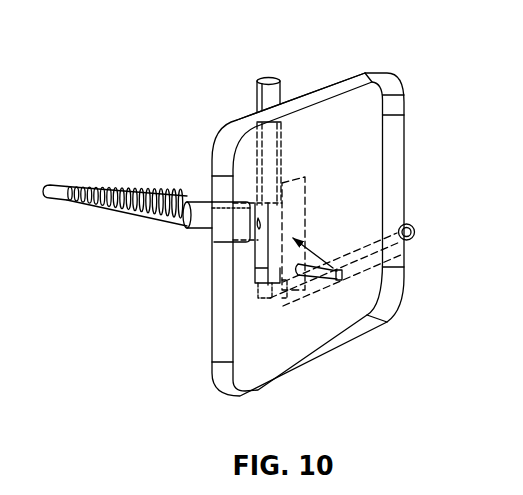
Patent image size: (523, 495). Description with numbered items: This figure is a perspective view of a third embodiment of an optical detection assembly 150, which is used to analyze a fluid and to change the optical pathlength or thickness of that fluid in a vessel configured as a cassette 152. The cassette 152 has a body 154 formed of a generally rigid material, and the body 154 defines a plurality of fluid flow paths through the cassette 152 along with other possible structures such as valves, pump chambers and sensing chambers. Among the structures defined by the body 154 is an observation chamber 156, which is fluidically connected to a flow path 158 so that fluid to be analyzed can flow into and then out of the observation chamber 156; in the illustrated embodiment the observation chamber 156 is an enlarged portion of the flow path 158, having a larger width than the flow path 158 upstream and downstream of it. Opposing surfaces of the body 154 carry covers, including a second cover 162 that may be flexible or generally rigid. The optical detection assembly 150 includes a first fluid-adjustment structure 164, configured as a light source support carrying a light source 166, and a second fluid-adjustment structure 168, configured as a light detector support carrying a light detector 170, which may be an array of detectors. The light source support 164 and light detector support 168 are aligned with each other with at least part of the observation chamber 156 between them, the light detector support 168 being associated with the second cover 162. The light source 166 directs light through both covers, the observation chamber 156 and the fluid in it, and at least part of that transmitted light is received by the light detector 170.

The optical detection assembly 150 is at (126, 281).
The cassette 152 is at (371, 104).
The body 154 is at (337, 80).
The observation chamber 156 is at (253, 247).
The flow path 158 is at (372, 240).
The second cover 162 is at (307, 92).
The first fluid-adjustment structure 164 is at (217, 243).
The light source 166 is at (258, 214).
The second fluid-adjustment structure 168 is at (341, 281).
The light detector 170 is at (263, 284).